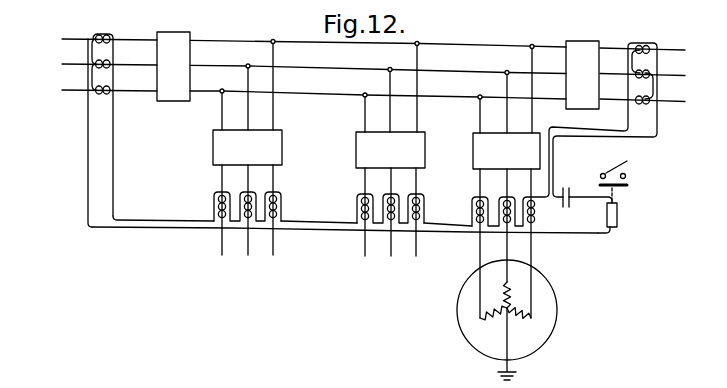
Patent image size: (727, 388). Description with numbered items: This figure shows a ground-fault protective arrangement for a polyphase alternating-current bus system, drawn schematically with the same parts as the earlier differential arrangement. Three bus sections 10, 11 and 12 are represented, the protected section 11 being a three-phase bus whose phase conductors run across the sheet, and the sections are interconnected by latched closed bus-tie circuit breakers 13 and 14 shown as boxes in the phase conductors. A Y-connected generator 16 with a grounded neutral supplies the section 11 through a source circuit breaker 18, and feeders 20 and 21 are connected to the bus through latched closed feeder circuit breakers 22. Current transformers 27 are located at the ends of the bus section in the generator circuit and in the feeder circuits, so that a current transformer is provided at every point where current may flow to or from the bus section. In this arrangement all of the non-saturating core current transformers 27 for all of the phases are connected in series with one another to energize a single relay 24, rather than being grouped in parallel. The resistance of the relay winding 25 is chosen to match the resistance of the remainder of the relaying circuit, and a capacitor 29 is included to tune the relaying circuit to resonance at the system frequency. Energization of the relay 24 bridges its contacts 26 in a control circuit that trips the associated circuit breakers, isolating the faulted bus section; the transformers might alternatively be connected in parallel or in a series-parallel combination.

The bus section 10 is at (147, 90).
The bus section 11 is at (303, 93).
The bus section 12 is at (609, 98).
The circuit breaker 13 is at (175, 43).
The circuit breaker 14 is at (581, 49).
The generator 16 is at (557, 297).
The circuit breaker 18 is at (506, 151).
The feeder 20 is at (273, 232).
The feeder 21 is at (365, 235).
The circuit breaker 22 is at (319, 149).
The relay 24 is at (619, 226).
The winding 25 is at (619, 210).
The contacts 26 is at (625, 174).
The current transformer 27 is at (650, 55).
The capacitor 29 is at (570, 185).